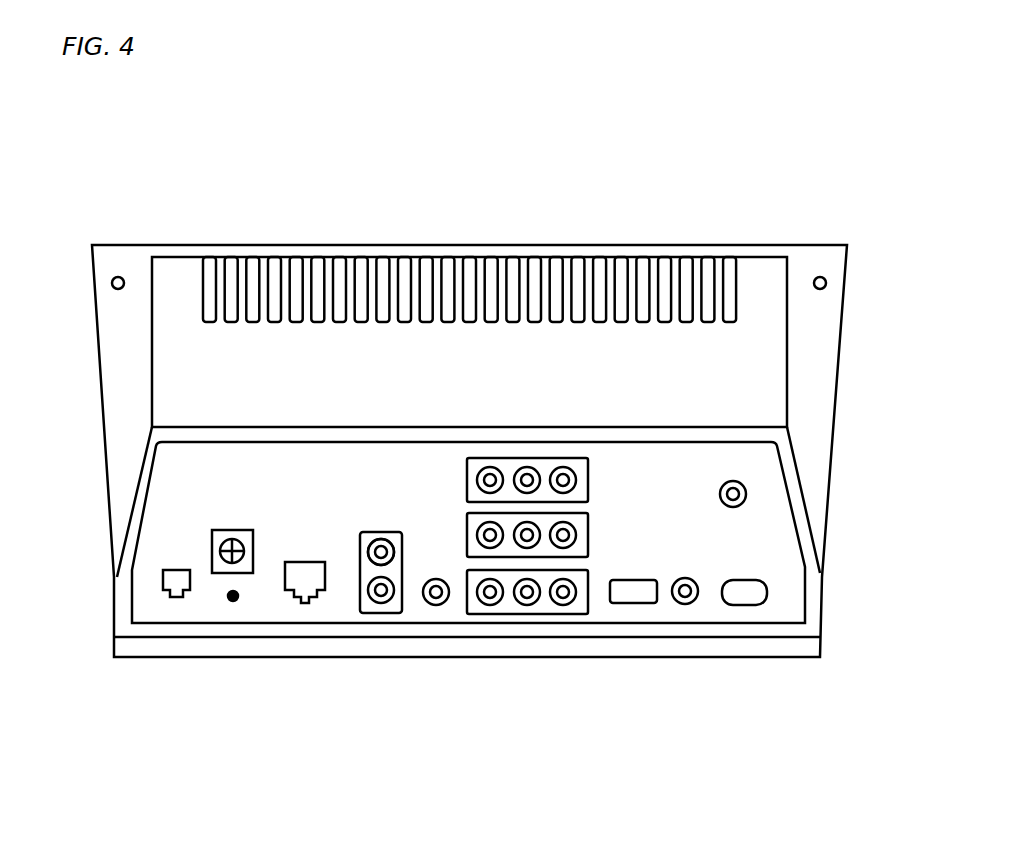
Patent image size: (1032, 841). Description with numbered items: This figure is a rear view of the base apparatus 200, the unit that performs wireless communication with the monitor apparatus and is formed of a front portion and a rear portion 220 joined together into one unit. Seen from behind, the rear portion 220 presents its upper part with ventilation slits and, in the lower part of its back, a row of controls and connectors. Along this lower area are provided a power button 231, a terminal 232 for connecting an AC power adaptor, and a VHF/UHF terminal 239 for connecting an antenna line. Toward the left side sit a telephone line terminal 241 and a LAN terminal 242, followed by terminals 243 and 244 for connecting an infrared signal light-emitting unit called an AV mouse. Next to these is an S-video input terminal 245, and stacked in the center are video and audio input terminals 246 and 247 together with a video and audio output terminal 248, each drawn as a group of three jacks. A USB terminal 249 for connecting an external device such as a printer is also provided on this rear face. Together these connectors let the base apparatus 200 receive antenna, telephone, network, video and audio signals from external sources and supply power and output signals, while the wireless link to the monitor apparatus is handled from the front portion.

The base apparatus 200 is at (765, 702).
The rear portion 220 is at (760, 297).
The power button 231 is at (767, 590).
The terminal for connecting an AC power adaptor 232 is at (685, 605).
The VHF/UHF terminal 239 is at (746, 494).
The telephone line terminal 241 is at (177, 597).
The LAN terminal 242 is at (305, 603).
The terminal for connecting an infrared signal light-emitting unit 243 is at (375, 613).
The terminal for connecting an infrared signal light-emitting unit 244 is at (360, 548).
The S-video input terminal 245 is at (436, 605).
The video and audio input terminal 246 is at (505, 613).
The video and audio input terminal 247 is at (467, 527).
The video and audio output terminal 248 is at (467, 472).
The USB terminal 249 is at (632, 603).